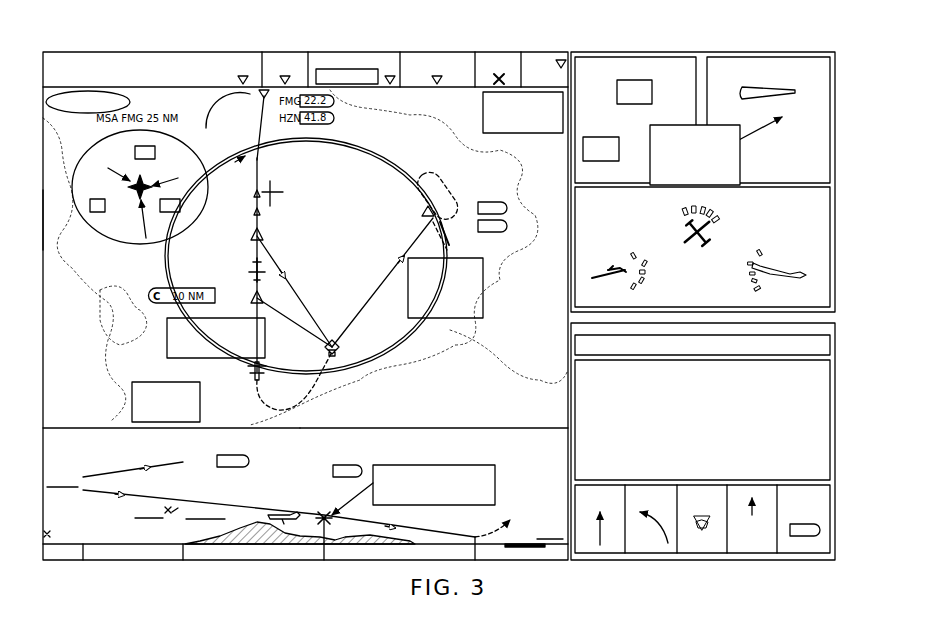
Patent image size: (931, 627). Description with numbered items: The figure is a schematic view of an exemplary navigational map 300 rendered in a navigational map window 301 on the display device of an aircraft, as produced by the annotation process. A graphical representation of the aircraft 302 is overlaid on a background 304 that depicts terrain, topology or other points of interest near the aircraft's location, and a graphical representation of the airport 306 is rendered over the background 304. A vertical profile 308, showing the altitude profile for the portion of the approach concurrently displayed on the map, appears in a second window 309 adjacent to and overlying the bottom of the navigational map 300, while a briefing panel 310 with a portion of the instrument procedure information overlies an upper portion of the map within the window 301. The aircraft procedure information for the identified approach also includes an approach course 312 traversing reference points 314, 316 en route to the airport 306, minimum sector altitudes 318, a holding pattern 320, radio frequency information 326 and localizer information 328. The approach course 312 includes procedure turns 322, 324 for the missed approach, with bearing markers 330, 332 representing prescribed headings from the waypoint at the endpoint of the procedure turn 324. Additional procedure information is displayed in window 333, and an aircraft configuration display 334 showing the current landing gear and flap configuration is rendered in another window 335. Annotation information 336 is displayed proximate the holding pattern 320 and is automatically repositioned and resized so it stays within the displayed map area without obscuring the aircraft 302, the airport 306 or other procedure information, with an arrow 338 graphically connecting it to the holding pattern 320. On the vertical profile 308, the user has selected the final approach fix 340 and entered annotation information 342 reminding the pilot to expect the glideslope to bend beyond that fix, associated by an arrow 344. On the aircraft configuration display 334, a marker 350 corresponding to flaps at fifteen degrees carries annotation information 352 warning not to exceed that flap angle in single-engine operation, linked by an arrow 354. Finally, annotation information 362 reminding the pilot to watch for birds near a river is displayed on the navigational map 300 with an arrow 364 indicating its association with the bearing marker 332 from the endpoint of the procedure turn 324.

The navigational map 300 is at (75, 328).
The window 301 is at (43, 230).
The graphical representation of the aircraft 302 is at (250, 270).
The background 304 is at (108, 386).
The airport 306 is at (253, 372).
The vertical profile 308 is at (73, 497).
The second window 309 is at (444, 428).
The briefing panel 310 is at (214, 52).
The approach course 312 is at (243, 238).
The reference point 314 is at (251, 235).
The reference point 316 is at (251, 298).
The minimum sector altitudes 318 is at (135, 252).
The holding pattern 320 is at (436, 168).
The procedure turn 322 is at (205, 106).
The procedure turn 324 is at (326, 392).
The radio frequency information 326 is at (483, 104).
The localizer information 328 is at (200, 410).
The bearing marker 330 is at (328, 320).
The bearing marker 332 is at (283, 300).
The window 333 is at (835, 399).
The aircraft configuration display 334 is at (808, 140).
The window 335 is at (835, 200).
The annotation information 336 is at (455, 318).
The arrow 338 is at (447, 252).
The final approach fix 340 is at (318, 524).
The annotation information 342 is at (495, 472).
The arrow 344 is at (360, 486).
The marker 350 is at (800, 96).
The annotation information 352 is at (658, 186).
The arrow 354 is at (760, 128).
The annotation information 362 is at (167, 347).
The arrow 364 is at (288, 330).